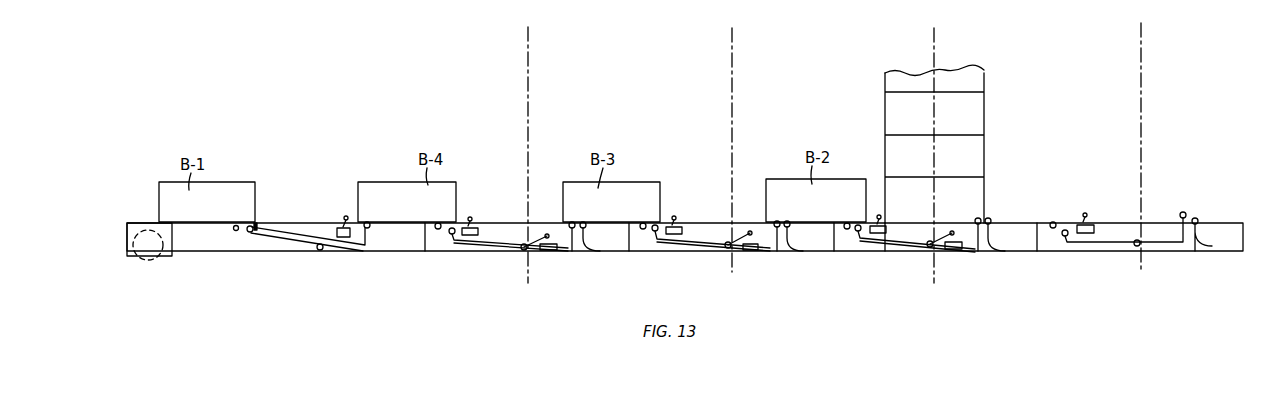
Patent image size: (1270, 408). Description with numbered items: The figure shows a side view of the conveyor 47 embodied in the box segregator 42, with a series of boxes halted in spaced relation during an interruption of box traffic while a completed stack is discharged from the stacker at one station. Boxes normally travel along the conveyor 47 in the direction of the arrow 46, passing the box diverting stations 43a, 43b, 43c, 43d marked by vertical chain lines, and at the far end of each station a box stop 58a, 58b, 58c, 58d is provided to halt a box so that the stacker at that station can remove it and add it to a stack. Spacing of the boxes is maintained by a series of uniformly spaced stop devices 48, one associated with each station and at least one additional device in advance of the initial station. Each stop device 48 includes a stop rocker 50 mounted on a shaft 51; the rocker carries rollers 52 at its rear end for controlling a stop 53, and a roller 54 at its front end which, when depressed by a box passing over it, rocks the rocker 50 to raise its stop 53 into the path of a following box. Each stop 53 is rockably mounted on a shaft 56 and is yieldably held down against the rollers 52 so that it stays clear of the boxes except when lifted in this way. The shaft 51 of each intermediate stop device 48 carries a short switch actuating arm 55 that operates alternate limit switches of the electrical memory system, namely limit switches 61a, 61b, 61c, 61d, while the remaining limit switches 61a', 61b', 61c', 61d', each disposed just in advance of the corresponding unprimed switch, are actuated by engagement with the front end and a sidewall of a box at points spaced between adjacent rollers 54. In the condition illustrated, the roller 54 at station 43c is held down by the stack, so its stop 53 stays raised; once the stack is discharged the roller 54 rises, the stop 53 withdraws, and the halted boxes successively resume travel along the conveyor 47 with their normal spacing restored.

The box segregator 42 is at (252, 171).
The box diverting station 43a is at (528, 68).
The box diverting station 43b is at (732, 57).
The box diverting station 43c is at (934, 50).
The box diverting station 43d is at (1141, 57).
The arrow 46 is at (710, 158).
The conveyor 47 is at (431, 259).
The stop device 48 is at (496, 250).
The stop rocker 50 is at (290, 248).
The shaft 51 is at (320, 251).
The rollers 52 is at (247, 231).
The stop 53 is at (458, 221).
The roller 54 is at (370, 228).
The switch actuating arm 55 is at (259, 226).
The shaft 56 is at (438, 223).
The box stop 58a is at (592, 250).
The box stop 58b is at (799, 250).
The box stop 58c is at (1002, 250).
The box stop 58d is at (1199, 224).
The limit switch 61a is at (486, 219).
The limit switch 61a' is at (331, 217).
The limit switch 61b is at (691, 219).
The limit switch 61b' is at (559, 265).
The limit switch 61c is at (896, 216).
The limit switch 61c' is at (763, 264).
The limit switch 61d is at (1102, 217).
The limit switch 61d' is at (967, 263).